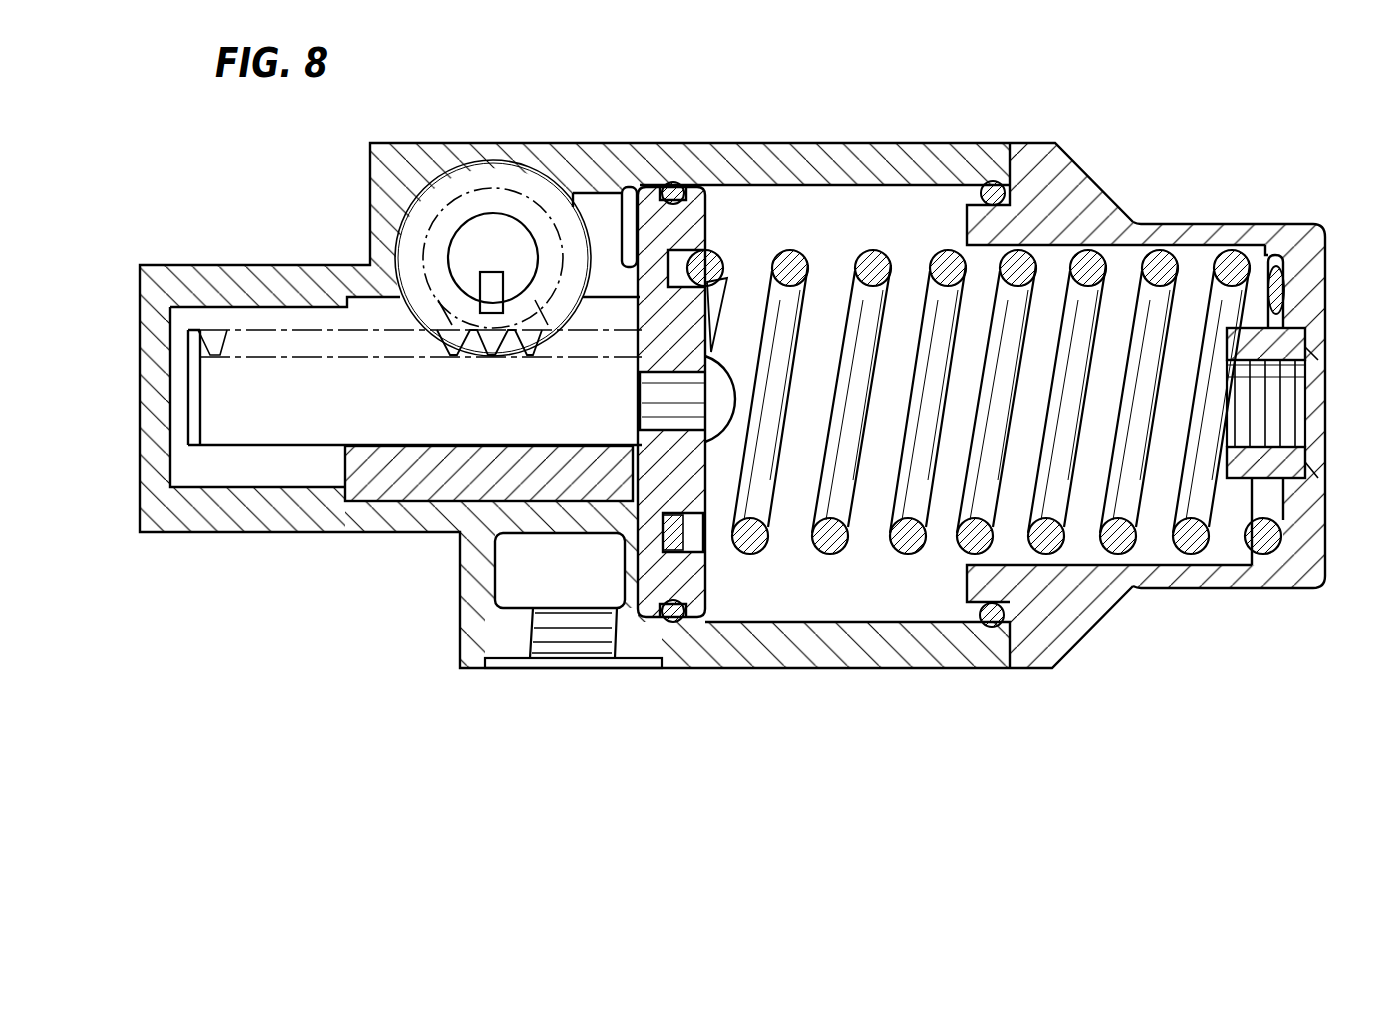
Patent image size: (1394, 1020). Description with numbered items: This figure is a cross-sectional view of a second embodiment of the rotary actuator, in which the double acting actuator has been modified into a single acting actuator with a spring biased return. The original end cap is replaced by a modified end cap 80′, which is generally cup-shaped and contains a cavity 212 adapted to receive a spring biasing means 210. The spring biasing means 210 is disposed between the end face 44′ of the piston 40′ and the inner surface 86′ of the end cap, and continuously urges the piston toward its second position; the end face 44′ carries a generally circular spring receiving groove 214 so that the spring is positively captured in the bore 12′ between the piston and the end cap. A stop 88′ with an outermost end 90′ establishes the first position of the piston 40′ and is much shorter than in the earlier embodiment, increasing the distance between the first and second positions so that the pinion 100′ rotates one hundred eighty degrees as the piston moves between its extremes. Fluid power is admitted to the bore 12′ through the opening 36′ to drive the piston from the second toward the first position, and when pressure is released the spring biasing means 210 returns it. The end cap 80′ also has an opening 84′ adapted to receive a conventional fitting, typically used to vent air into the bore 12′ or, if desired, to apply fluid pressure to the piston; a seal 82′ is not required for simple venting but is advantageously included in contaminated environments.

The first bore 12′ is at (903, 198).
The seal 82′ is at (993, 181).
The end cap 80′ is at (1216, 203).
The pinion 100′ is at (510, 195).
The spring receiving groove 214 is at (708, 254).
The end face of piston 44′ is at (711, 318).
The inner surface of end cap 86′ is at (1282, 316).
The opening 84′ is at (1297, 418).
The piston 40′ is at (692, 583).
The spring biasing means 210 is at (847, 556).
The stop 88′ is at (985, 582).
The outermost end of stop 90′ is at (972, 590).
The cavity 212 is at (1155, 550).
The opening 36′ is at (588, 643).